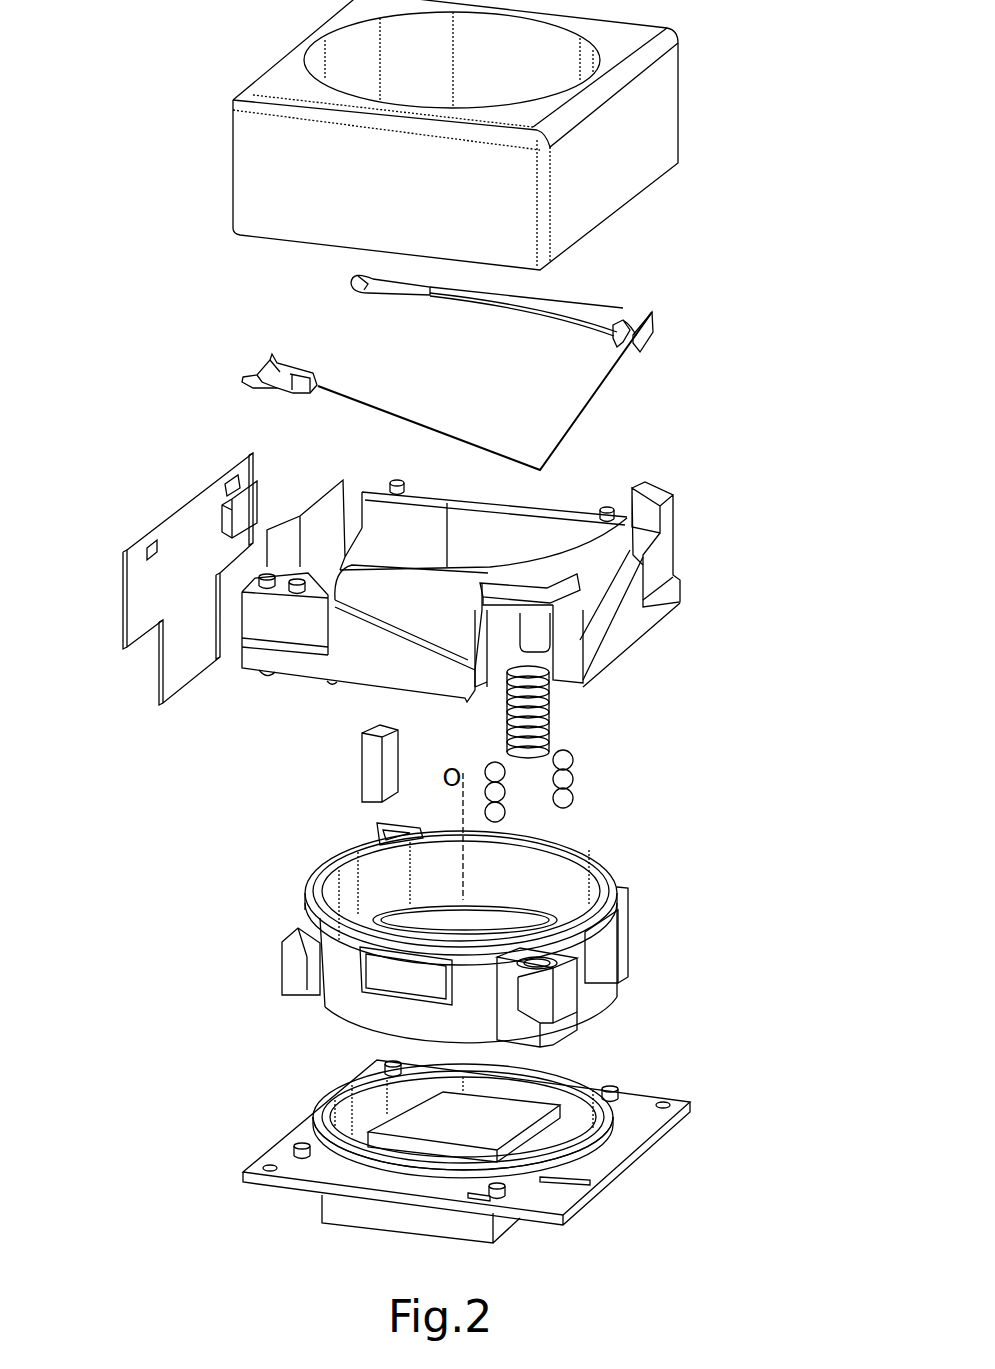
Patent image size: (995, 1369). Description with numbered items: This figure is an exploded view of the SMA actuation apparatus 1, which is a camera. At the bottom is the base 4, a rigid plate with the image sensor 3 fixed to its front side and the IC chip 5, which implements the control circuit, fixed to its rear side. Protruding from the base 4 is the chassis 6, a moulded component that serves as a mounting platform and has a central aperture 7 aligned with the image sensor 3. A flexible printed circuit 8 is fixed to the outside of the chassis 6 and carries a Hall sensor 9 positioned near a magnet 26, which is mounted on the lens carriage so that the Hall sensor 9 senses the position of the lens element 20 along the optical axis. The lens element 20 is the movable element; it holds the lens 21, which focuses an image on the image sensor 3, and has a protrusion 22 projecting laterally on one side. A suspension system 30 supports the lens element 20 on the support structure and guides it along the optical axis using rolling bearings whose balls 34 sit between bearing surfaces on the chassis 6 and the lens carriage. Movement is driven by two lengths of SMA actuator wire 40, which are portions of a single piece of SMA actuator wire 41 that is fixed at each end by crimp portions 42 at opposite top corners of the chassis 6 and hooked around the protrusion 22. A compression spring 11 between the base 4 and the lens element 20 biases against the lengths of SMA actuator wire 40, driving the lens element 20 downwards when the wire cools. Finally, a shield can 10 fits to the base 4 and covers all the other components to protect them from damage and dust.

The SMA actuation apparatus 1 is at (162, 171).
The image sensor 3 is at (517, 1120).
The base 4 is at (613, 1170).
The IC chip 5 is at (348, 1207).
The chassis 6 is at (663, 563).
The central aperture 7 is at (535, 530).
The flexible printed circuit 8 is at (177, 613).
The Hall sensor 9 is at (228, 481).
The shield can 10 is at (648, 143).
The compression spring 11 is at (550, 717).
The lens element 20 is at (603, 945).
The lens 21 is at (550, 880).
The protrusion 22 is at (570, 1020).
The magnet 26 is at (372, 767).
The suspension system 30 is at (613, 780).
The balls 34 is at (569, 757).
The lengths of SMA actuator wire 40 is at (417, 420).
The piece of SMA actuator wire 41 is at (617, 368).
The crimp portions 42 is at (263, 360).